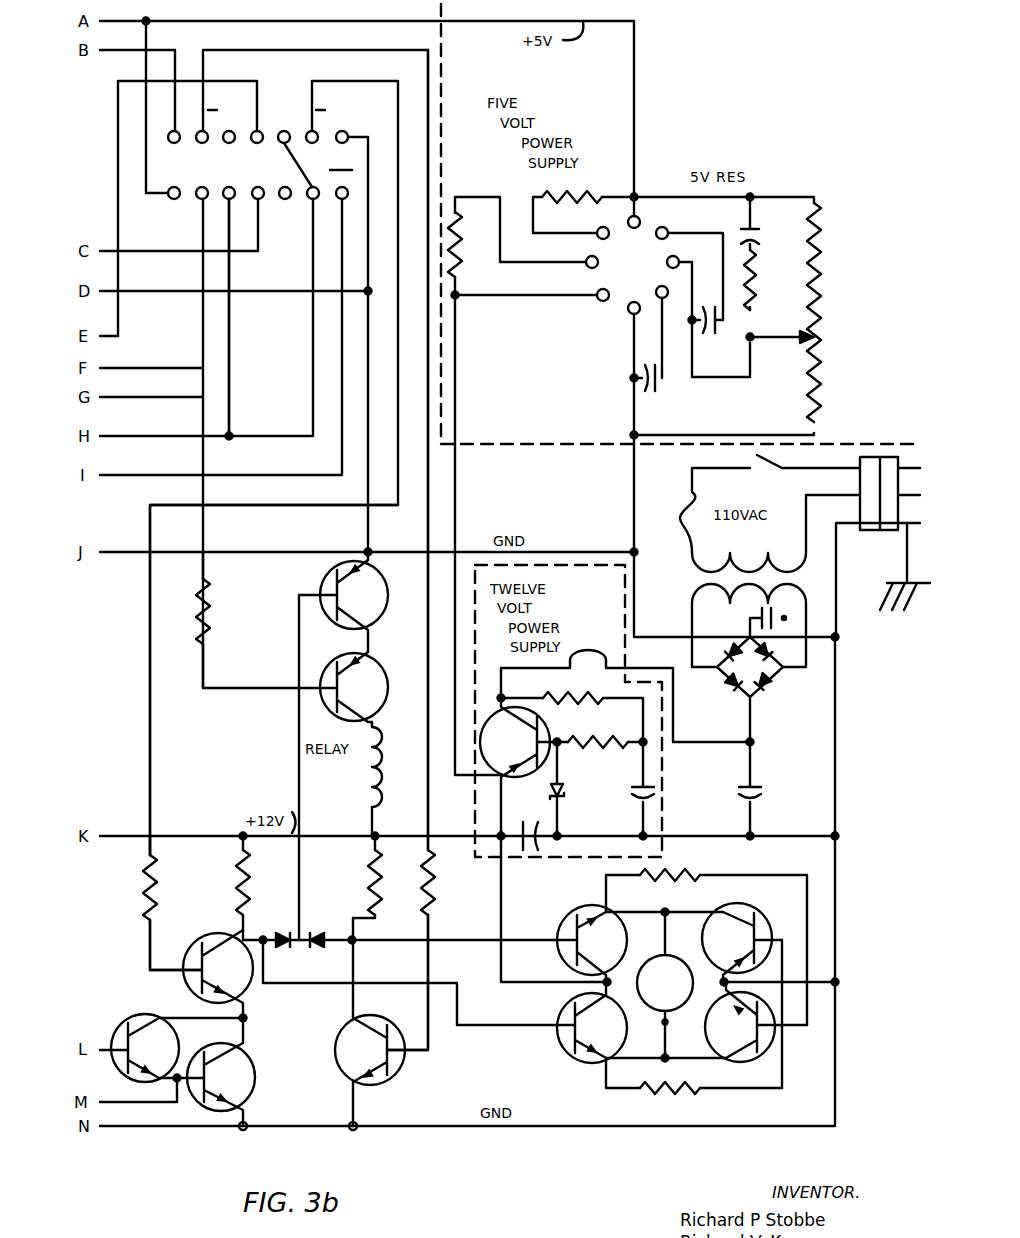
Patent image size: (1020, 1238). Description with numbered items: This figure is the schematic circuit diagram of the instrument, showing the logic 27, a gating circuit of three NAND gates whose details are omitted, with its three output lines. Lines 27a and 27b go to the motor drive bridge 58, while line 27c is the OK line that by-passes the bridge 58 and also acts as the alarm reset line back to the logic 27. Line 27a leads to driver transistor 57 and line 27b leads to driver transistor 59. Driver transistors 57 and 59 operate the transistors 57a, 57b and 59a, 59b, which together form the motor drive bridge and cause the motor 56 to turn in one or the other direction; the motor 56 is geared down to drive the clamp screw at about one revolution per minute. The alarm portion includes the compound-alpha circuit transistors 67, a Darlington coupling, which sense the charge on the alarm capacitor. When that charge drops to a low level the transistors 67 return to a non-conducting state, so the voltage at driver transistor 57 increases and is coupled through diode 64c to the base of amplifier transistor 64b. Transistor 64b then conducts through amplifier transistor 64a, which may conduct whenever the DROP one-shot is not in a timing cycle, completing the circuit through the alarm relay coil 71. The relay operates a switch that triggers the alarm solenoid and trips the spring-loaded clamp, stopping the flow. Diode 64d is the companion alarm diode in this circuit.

The logic 27 is at (294, 110).
The output line 27a is at (148, 527).
The output line 27b is at (427, 507).
The OK line 27c is at (246, 333).
The motor 56 is at (651, 967).
The driver transistor 57 is at (209, 930).
The transistor 57a is at (558, 1047).
The transistor 57b is at (775, 905).
The motor drive bridge 58 is at (667, 1117).
The driver transistor 59 is at (340, 1073).
The transistor 59a is at (745, 1068).
The transistor 59b is at (580, 914).
The amplifier transistor 64a is at (320, 665).
The amplifier transistor 64b is at (320, 580).
The alarm resistor diode 64c is at (283, 934).
The alarm resistor diode 64d is at (320, 934).
The compound-alpha circuit transistors 67 is at (197, 1040).
The alarm relay coil 71 is at (366, 775).